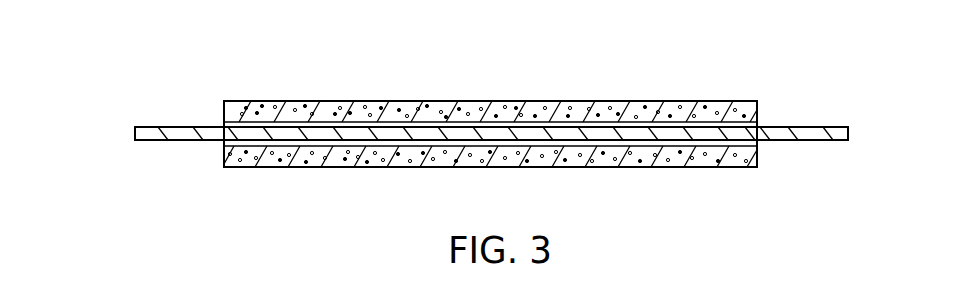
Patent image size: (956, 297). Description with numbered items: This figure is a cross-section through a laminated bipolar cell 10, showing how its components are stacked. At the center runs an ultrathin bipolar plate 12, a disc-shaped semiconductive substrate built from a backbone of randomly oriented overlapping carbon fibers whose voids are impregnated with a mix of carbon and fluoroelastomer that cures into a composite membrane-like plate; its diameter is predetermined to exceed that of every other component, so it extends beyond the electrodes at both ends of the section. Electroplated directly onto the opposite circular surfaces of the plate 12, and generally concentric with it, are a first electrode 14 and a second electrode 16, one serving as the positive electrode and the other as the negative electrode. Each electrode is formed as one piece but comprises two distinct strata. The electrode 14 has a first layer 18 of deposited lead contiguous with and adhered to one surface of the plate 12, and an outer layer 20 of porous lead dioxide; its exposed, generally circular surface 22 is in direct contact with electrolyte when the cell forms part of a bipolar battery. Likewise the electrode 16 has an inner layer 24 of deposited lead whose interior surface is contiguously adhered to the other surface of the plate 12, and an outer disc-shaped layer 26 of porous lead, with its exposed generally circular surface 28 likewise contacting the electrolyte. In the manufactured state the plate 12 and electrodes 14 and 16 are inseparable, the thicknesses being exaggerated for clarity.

The bipolar cell 10 is at (310, 66).
The bipolar plate 12 is at (120, 130).
The first electrode 14 is at (212, 118).
The second electrode 16 is at (212, 146).
The first layer 18 is at (758, 125).
The outer layer 20 is at (757, 124).
The exposed circular surface 22 is at (371, 101).
The inner layer 24 is at (758, 142).
The outer disc-shaped layer 26 is at (715, 163).
The exposed circular surface 28 is at (394, 168).